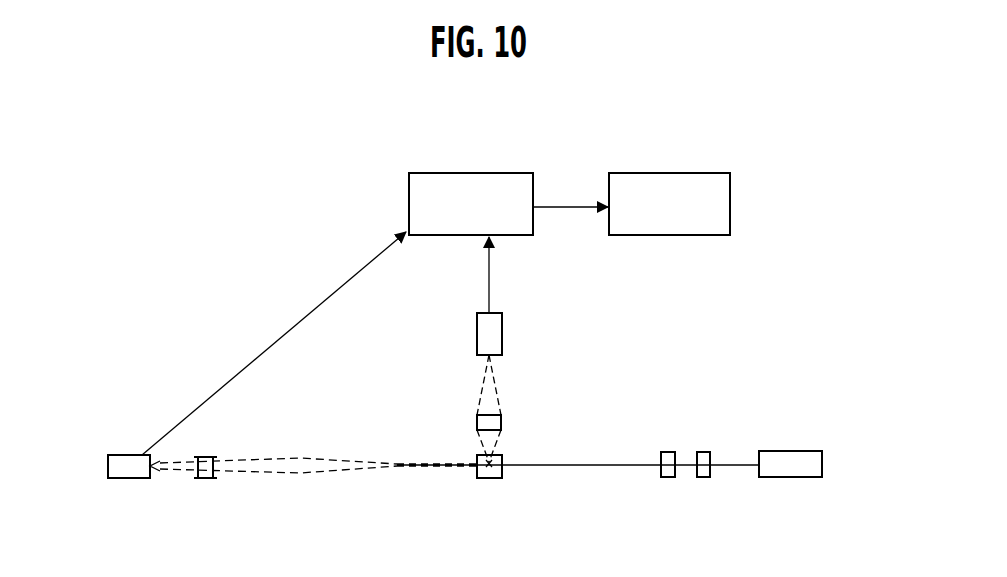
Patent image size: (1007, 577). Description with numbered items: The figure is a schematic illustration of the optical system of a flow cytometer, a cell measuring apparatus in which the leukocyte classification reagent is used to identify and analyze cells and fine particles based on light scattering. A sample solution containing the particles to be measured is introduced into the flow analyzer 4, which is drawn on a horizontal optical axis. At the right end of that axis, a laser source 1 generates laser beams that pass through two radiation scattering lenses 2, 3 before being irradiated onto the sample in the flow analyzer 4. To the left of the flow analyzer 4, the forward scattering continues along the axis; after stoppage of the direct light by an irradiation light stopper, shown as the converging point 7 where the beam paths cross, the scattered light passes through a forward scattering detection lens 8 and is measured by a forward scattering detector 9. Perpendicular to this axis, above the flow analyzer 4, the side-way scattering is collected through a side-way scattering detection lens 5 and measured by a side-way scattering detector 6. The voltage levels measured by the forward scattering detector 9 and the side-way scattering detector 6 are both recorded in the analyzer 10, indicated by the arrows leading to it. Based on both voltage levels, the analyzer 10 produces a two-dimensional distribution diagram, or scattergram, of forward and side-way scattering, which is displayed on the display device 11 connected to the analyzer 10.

The laser source 1 is at (784, 462).
The radiation scattering lens 2 is at (702, 452).
The radiation scattering lens 3 is at (668, 452).
The flow analyzer 4 is at (490, 478).
The side-way scattering detection lens 5 is at (497, 423).
The side-way scattering detector 6 is at (495, 342).
The focal point 7 is at (396, 462).
The forward scattering detection lens 8 is at (207, 478).
The forward scattering detector 9 is at (132, 478).
The analyzer 10 is at (457, 190).
The display device 11 is at (650, 180).